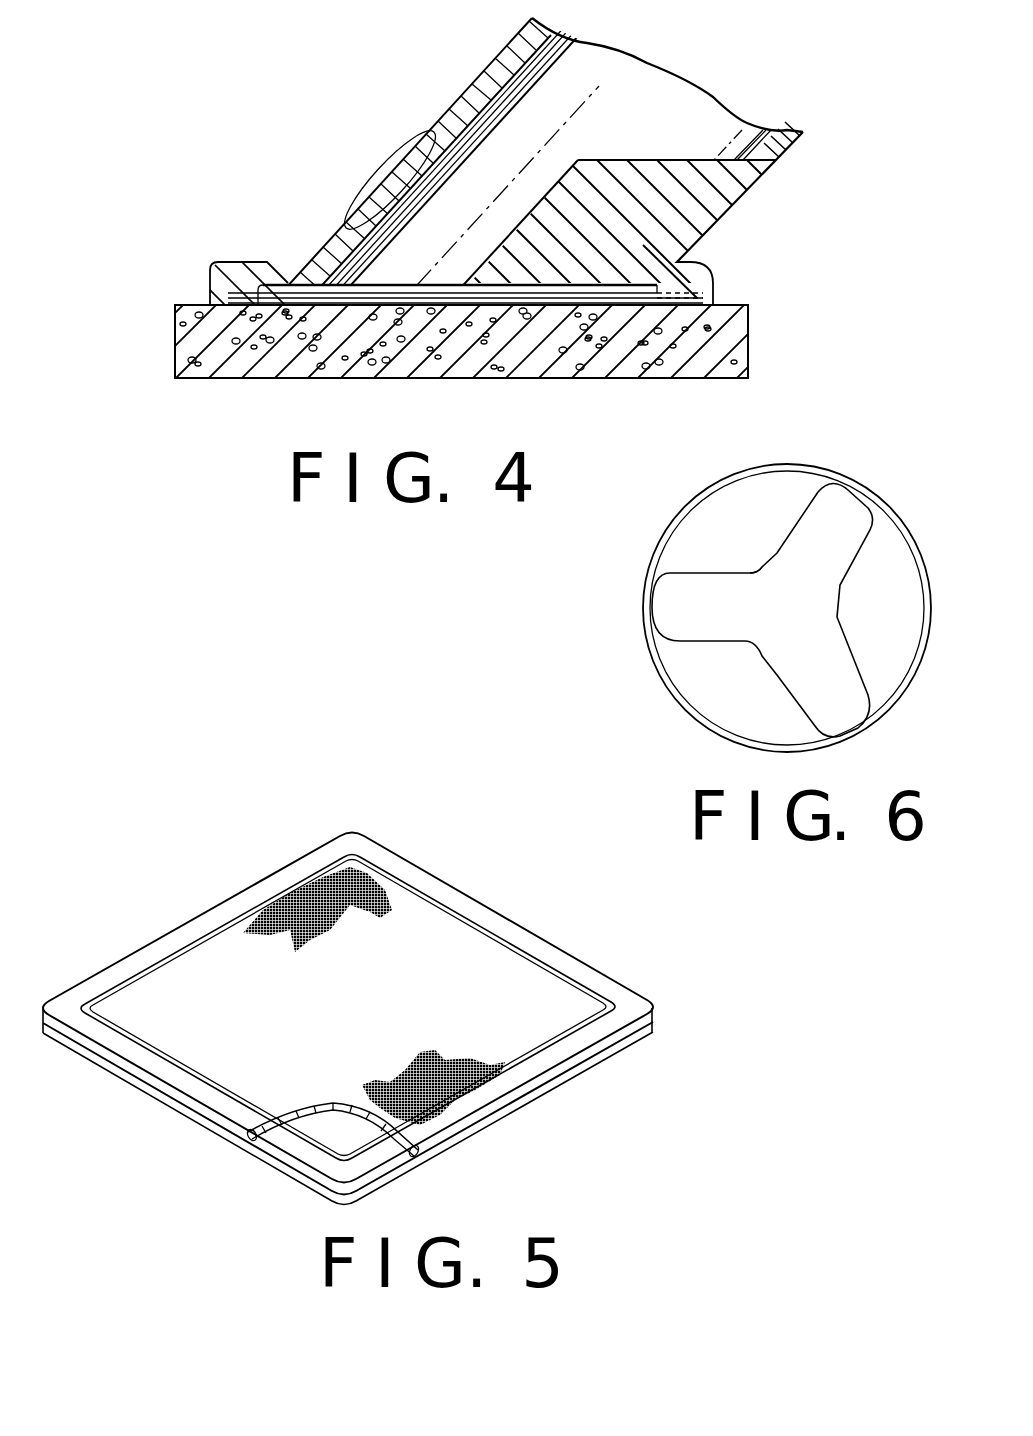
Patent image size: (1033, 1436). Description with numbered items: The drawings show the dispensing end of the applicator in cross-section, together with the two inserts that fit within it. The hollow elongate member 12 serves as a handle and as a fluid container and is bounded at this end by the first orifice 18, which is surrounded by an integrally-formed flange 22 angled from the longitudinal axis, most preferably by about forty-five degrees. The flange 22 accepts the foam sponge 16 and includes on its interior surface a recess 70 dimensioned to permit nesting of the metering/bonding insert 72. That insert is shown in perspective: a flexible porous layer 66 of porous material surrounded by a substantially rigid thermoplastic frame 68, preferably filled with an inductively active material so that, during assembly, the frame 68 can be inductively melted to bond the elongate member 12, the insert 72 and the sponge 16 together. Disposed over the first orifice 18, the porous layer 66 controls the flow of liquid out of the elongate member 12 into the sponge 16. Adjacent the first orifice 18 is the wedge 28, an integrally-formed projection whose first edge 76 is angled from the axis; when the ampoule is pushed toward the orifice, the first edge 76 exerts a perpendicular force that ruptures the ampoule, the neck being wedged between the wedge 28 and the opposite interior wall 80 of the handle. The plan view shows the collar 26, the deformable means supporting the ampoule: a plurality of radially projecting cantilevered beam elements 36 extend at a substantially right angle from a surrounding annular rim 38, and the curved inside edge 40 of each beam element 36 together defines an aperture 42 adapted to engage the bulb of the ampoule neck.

In FIG. 4, the hollow elongate member 12 is at (450, 70).
In FIG. 4, the foam sponge 16 is at (623, 378).
In FIG. 4, the first major orifice 18 is at (590, 300).
In FIG. 4, the flange 22 is at (245, 262).
In FIG. 6, the collar 26 is at (630, 627).
In FIG. 4, the wedge 28 is at (700, 236).
In FIG. 6, the cantilevered beam elements 36 is at (745, 546).
In FIG. 6, the annular rim 38 is at (655, 672).
In FIG. 6, the inside edge 40 is at (750, 582).
In FIG. 6, the aperture 42 is at (797, 593).
In FIG. 4, the flexible porous layer 66 is at (360, 305).
In FIG. 5, the flexible porous layer 66 is at (367, 880).
In FIG. 4, the rigid frame 68 is at (672, 305).
In FIG. 5, the rigid frame 68 is at (598, 1063).
In FIG. 4, the recess 70 is at (253, 296).
In FIG. 4, the metering/bonding insert 72 is at (282, 275).
In FIG. 5, the metering/bonding insert 72 is at (210, 882).
In FIG. 4, the first edge 76 is at (670, 160).
In FIG. 4, the interior wall 80 is at (368, 213).